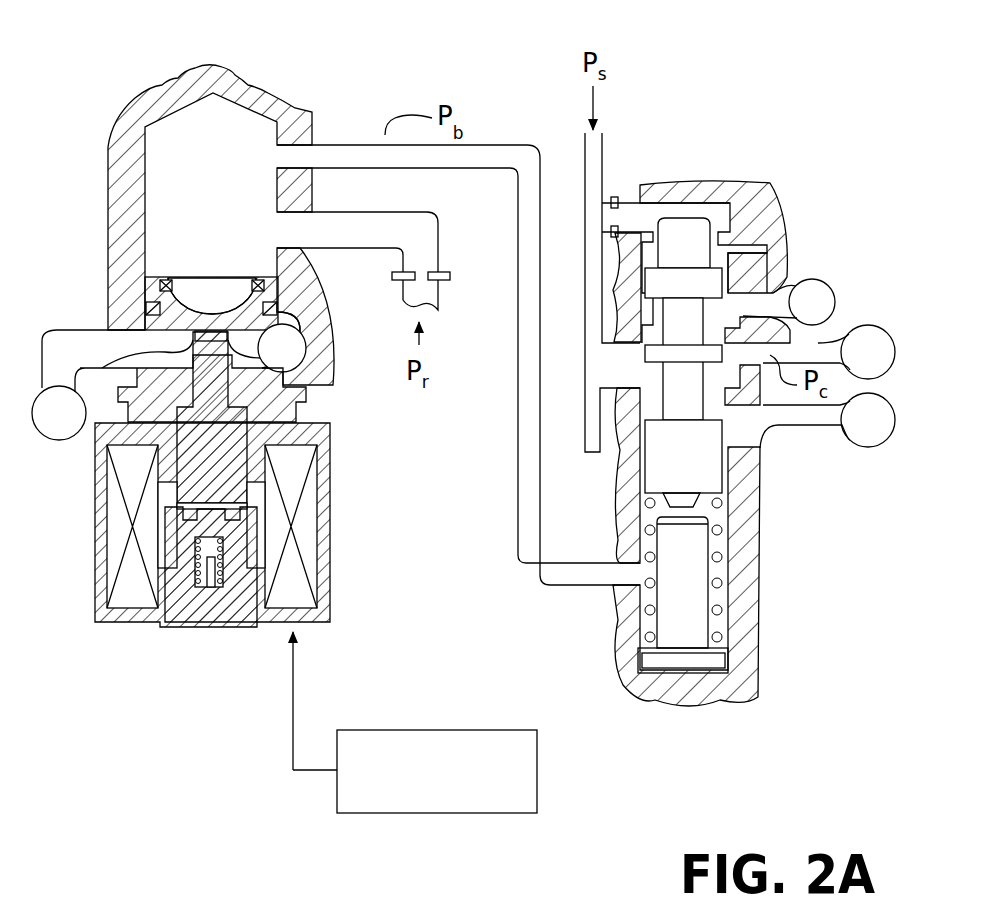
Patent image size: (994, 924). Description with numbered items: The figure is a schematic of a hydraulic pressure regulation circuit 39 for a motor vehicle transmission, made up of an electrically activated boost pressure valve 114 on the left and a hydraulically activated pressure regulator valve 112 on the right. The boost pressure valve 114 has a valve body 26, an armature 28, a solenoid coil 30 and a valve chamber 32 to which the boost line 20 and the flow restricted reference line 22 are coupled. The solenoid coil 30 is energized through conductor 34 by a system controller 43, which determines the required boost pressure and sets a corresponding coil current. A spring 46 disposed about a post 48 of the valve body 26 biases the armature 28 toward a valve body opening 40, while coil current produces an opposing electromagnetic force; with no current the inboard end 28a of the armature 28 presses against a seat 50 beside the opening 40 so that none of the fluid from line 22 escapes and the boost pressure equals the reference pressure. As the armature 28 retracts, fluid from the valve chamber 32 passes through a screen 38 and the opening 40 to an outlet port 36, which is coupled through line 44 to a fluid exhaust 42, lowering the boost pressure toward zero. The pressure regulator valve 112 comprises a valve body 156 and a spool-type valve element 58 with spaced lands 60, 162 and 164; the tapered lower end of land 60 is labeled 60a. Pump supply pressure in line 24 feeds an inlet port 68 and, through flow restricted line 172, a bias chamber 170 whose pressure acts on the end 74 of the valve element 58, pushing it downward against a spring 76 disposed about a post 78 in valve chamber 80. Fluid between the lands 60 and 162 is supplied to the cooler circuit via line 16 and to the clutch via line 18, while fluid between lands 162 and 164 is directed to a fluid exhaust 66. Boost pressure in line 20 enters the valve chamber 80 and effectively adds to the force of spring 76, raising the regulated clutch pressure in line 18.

The hydraulic pressure regulation circuit 39 is at (413, 90).
The valve chamber 32 is at (172, 135).
The boost pressure valve 114 is at (92, 213).
The screen 38 is at (182, 292).
The inboard end 28a is at (206, 320).
The valve body opening 40 is at (238, 292).
The line 44 is at (63, 345).
The outlet port 36 is at (122, 362).
The fluid exhaust 42 is at (59, 441).
The flow restricted line 22 is at (360, 255).
The seat 50 is at (306, 348).
The valve body 26 is at (305, 402).
The armature 28 is at (232, 420).
The solenoid coil 30 is at (305, 528).
The spring 46 is at (195, 570).
The post 48 is at (215, 595).
The conductor 34 is at (295, 672).
The system controller 43 is at (439, 783).
The line 20 is at (465, 172).
The line 24 is at (583, 180).
The flow restricted line 172 is at (630, 215).
The end 74 is at (677, 228).
The bias chamber 170 is at (708, 213).
The pressure regulator valve 112 is at (780, 182).
The land 164 is at (660, 284).
The land 162 is at (670, 383).
The spool-type valve element 58 is at (658, 354).
The inlet port 68 is at (612, 376).
The land 60 is at (668, 482).
The spool end 60a is at (697, 501).
The fluid exhaust 66 is at (820, 281).
The line 18 is at (835, 336).
The line 16 is at (803, 430).
The valve body 156 is at (745, 564).
The spring 76 is at (720, 585).
The post 78 is at (675, 612).
The valve chamber 80 is at (720, 626).